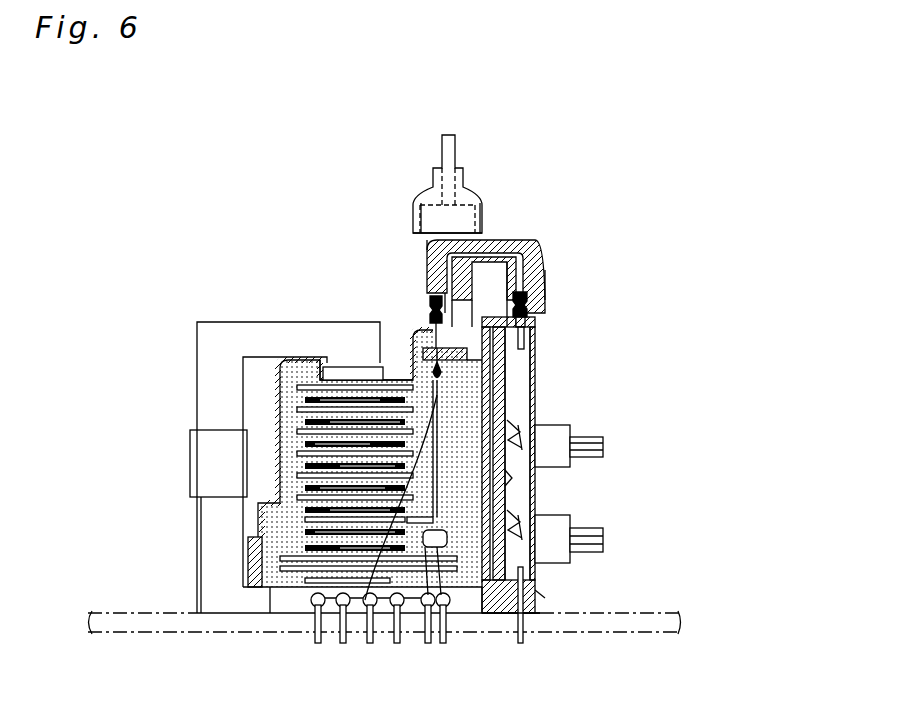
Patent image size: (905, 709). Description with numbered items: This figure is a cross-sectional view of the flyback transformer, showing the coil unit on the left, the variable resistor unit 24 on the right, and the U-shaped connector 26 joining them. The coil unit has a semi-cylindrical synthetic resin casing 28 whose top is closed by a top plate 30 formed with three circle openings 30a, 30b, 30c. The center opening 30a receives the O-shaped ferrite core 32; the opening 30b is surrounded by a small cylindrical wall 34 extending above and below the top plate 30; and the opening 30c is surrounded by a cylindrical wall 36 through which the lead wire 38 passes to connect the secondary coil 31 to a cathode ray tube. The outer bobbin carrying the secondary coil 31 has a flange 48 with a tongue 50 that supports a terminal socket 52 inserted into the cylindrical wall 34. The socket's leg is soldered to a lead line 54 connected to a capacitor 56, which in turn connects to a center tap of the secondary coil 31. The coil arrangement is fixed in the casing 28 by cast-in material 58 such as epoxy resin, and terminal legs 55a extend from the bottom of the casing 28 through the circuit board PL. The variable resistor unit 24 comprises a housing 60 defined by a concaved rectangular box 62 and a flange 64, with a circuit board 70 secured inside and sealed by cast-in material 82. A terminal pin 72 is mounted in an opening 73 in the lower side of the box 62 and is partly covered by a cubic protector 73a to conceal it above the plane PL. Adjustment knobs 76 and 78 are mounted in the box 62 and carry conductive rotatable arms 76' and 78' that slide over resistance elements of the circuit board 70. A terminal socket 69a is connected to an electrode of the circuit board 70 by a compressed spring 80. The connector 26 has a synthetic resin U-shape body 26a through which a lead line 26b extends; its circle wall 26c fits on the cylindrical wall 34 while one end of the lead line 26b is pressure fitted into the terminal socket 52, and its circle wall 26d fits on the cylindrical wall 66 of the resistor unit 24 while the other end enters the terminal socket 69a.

The variable resistor unit 24 is at (536, 322).
The connector 26 is at (497, 241).
The U-shape body 26a is at (522, 262).
The lead line 26b is at (543, 283).
The circle wall 26c is at (432, 302).
The circle wall 26d is at (545, 303).
The casing 28 is at (275, 405).
The top plate 30 is at (290, 358).
The circle opening 30a is at (320, 360).
The circle opening 30b is at (430, 350).
The circle opening 30c is at (467, 187).
The secondary coil 31 is at (295, 453).
The ferrite core 32 is at (213, 333).
The cylindrical wall 34 is at (448, 272).
The cylindrical wall 36 is at (427, 240).
The lead wire 38 is at (447, 150).
The flange 48 is at (285, 383).
The tongue 50 is at (385, 366).
The terminal socket 52 is at (435, 345).
The lead line 54 is at (365, 600).
The terminal legs 55a is at (338, 643).
The capacitor 56 is at (472, 605).
The cast-in material 58 is at (457, 587).
The housing 60 is at (505, 362).
The rectangular box 62 is at (535, 382).
The flange 64 is at (492, 617).
The cylindrical wall 66 is at (528, 300).
The terminal socket 69a is at (537, 325).
The circuit board 70 is at (503, 495).
The terminal pin 72 is at (523, 638).
The opening 73 is at (527, 617).
The cubic protector 73a is at (543, 597).
The adjustment knob 76 is at (620, 446).
The rotatable arm 76' is at (573, 424).
The adjustment knob 78 is at (620, 539).
The rotatable arm 78' is at (575, 517).
The spring 80 is at (525, 333).
The cast-in material 82 is at (500, 482).
The plane PL is at (660, 630).